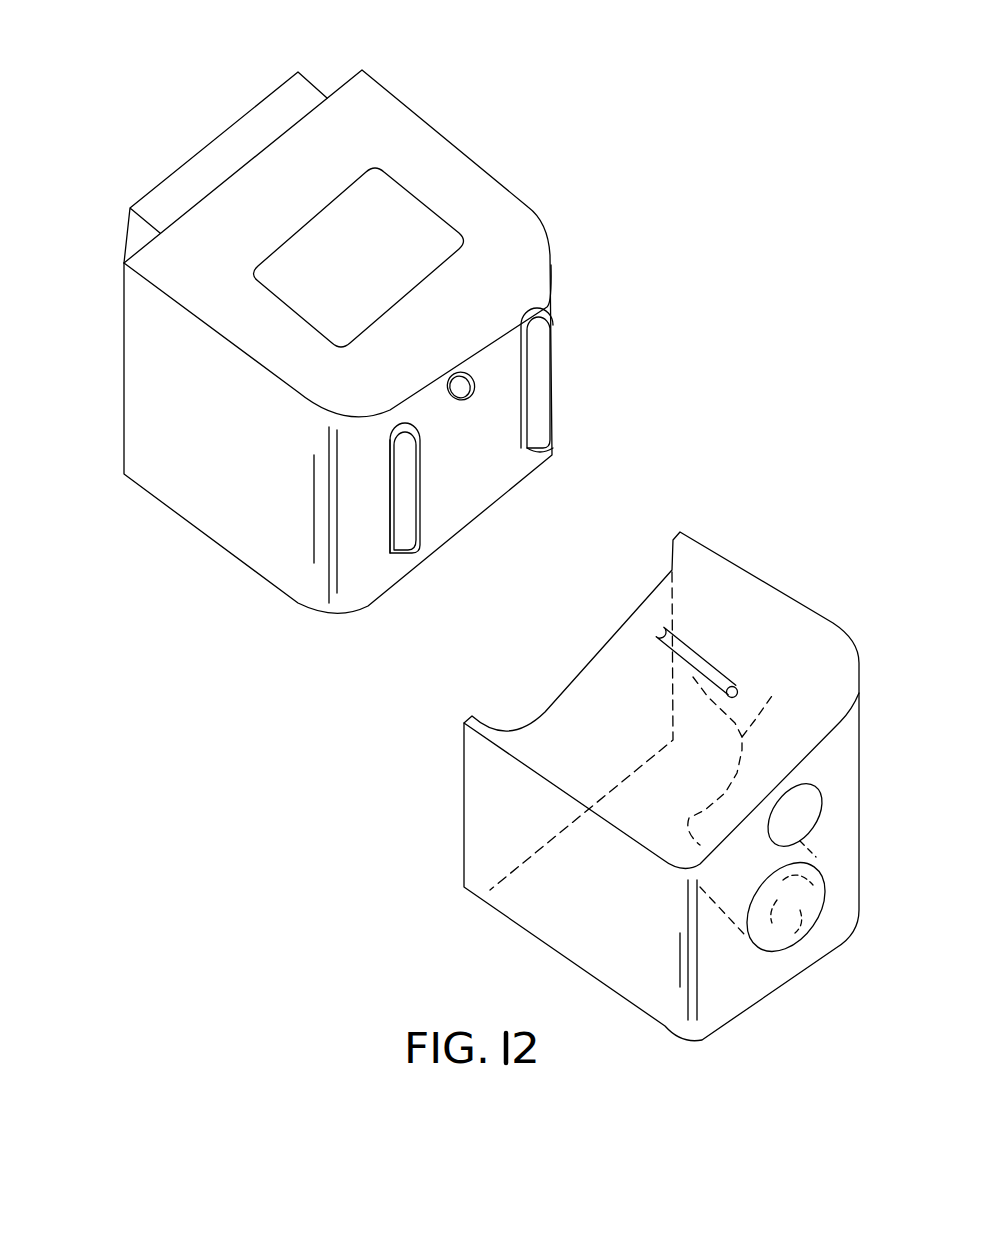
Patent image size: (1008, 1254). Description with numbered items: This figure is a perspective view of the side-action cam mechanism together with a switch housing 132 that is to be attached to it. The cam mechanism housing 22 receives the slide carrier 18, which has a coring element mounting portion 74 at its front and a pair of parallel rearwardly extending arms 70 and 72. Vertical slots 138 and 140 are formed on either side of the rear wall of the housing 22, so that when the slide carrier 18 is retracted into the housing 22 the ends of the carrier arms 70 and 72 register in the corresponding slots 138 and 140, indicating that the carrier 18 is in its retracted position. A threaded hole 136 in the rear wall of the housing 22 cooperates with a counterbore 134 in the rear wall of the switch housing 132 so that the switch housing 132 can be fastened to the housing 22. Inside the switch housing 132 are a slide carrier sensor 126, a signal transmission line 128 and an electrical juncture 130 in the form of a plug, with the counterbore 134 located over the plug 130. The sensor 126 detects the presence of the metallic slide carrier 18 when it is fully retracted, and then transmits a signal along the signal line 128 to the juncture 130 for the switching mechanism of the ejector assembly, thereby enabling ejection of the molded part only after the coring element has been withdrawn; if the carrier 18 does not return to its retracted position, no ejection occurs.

The slide carrier 18 is at (106, 217).
The cam mechanism housing 22 is at (490, 192).
The coring element mounting portion 74 is at (290, 98).
The threaded hole 136 is at (460, 372).
The rearwardly extending arm 72 is at (537, 360).
The vertical slot 140 is at (543, 455).
The rearwardly extending arm 70 is at (415, 513).
The vertical slot 138 is at (393, 557).
The switch housing 132 is at (820, 627).
The slide carrier sensor 126 is at (692, 648).
The signal transmission line 128 is at (770, 665).
The counterbore 134 is at (818, 790).
The electrical juncture 130 is at (826, 876).